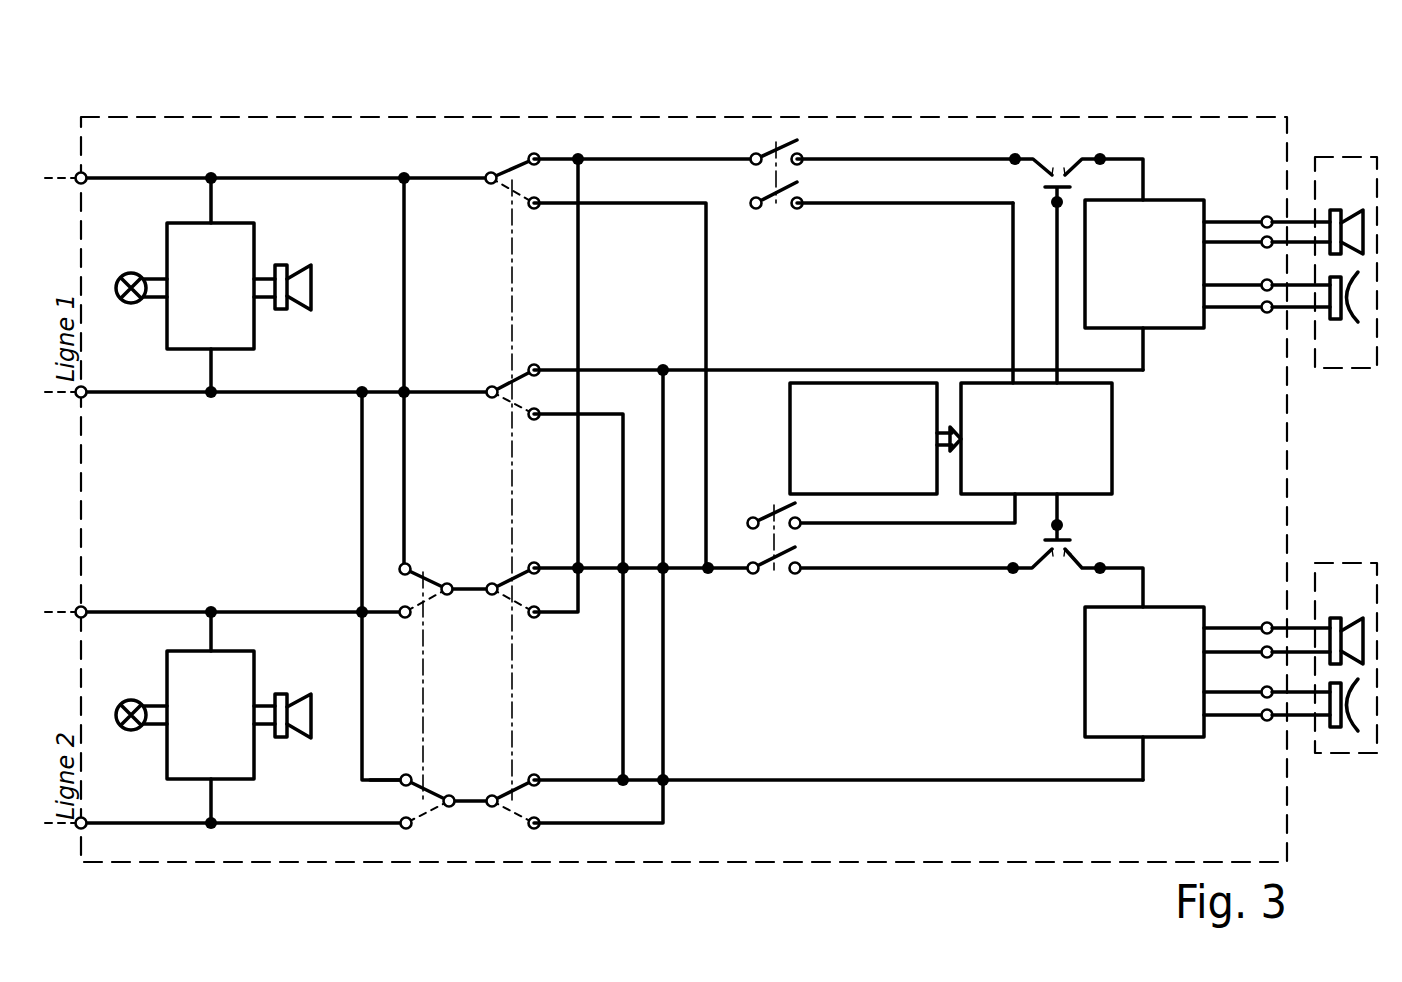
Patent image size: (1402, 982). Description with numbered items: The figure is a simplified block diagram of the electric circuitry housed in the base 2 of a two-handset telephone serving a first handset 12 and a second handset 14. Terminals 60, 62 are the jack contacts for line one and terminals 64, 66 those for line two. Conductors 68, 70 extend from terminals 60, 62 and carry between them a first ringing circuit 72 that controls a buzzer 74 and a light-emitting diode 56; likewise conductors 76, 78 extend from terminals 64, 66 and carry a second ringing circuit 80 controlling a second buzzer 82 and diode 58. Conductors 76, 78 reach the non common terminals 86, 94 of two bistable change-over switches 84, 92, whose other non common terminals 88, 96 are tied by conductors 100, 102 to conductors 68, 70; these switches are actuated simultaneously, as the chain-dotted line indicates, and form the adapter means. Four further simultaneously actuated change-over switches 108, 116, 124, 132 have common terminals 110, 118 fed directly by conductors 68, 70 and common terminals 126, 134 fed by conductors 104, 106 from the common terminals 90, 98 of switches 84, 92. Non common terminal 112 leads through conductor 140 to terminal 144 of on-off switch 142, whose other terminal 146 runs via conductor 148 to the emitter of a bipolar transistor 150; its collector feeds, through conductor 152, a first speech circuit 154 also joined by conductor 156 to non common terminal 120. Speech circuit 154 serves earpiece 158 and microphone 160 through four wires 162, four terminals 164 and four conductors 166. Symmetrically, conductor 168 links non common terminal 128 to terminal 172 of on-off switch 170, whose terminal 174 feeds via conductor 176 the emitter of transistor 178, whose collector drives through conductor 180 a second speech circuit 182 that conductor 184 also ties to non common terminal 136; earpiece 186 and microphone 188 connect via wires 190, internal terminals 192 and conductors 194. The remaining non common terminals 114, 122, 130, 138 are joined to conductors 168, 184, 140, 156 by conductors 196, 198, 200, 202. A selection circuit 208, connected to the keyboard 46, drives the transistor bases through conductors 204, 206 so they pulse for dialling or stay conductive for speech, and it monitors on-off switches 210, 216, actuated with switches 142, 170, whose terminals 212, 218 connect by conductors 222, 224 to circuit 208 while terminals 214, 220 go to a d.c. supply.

The base 2 is at (684, 489).
The first handset 12 is at (1346, 264).
The second handset 14 is at (1347, 660).
The keyboard 46 is at (880, 455).
The light-emitting diode 56 is at (131, 272).
The diode 58 is at (135, 730).
The first circuit terminal 60 is at (86, 173).
The first circuit terminal 62 is at (86, 397).
The terminal 64 is at (86, 608).
The terminal 66 is at (84, 828).
The conductor 68 is at (311, 178).
The conductor 70 is at (259, 395).
The first ringing circuit 72 is at (200, 235).
The buzzer 74 is at (292, 278).
The conductor 76 is at (260, 610).
The conductor 78 is at (333, 825).
The second ringing circuit 80 is at (220, 740).
The second buzzer 82 is at (298, 738).
The bistable change-over switch 84 is at (425, 574).
The non common terminal 86 is at (403, 618).
The non common terminal 88 is at (400, 565).
The common terminal 90 is at (448, 595).
The bistable change-over switch 92 is at (405, 772).
The non common terminal 94 is at (408, 830).
The non common terminal 96 is at (398, 784).
The common terminal 98 is at (450, 807).
The conductor 100 is at (405, 470).
The conductor 102 is at (360, 553).
The conductor 104 is at (467, 587).
The conductor 106 is at (463, 798).
The bistable change-over switch 108 is at (508, 168).
The common terminal 110 is at (487, 173).
The non common terminal 112 is at (535, 153).
The non common terminal 114 is at (538, 198).
The bistable change-over switch 116 is at (506, 383).
The common terminal 118 is at (488, 389).
The non common terminal 120 is at (536, 365).
The non common terminal 122 is at (536, 420).
The bistable change-over switch 124 is at (507, 576).
The common terminal 126 is at (492, 595).
The non common terminal 128 is at (536, 562).
The non common terminal 130 is at (536, 618).
The bistable change-over switch 132 is at (508, 793).
The common terminal 134 is at (492, 807).
The non common terminal 136 is at (537, 786).
The non common terminal 138 is at (534, 830).
The conductor 140 is at (663, 159).
The on-off switch 142 is at (778, 145).
The terminal 144 is at (755, 153).
The terminal 146 is at (799, 153).
The conductor 148 is at (935, 159).
The bipolar transistor 150 is at (1058, 176).
The conductor 152 is at (1143, 159).
The first speech circuit 154 is at (1160, 225).
The conductor 156 is at (882, 370).
The earpiece 158 is at (1350, 222).
The microphone 160 is at (1338, 320).
The wires 162 is at (1300, 242).
The terminals 164 is at (1268, 236).
The conductors 166 is at (1228, 242).
The conductor 168 is at (725, 568).
The on-off switch 170 is at (784, 580).
The terminal 172 is at (758, 573).
The terminal 174 is at (798, 573).
The conductor 176 is at (960, 568).
The bipolar transistor 178 is at (1056, 556).
The conductor 180 is at (1143, 576).
The second speech circuit 182 is at (1105, 715).
The conductor 184 is at (865, 780).
The earpiece 186 is at (1350, 628).
The microphone 188 is at (1338, 728).
The wires 190 is at (1303, 652).
The internal terminals 192 is at (1268, 646).
The conductors 194 is at (1228, 652).
The conductor 196 is at (706, 300).
The conductor 198 is at (624, 515).
The conductor 200 is at (578, 490).
The conductor 202 is at (663, 675).
The conductor 204 is at (1013, 298).
The conductor 206 is at (1057, 510).
The selection circuit 208 is at (1112, 462).
The on-off switch 210 is at (776, 198).
The terminal 212 is at (798, 209).
The terminal 214 is at (756, 209).
The on-off switch 216 is at (770, 510).
The terminal 218 is at (800, 528).
The terminal 220 is at (752, 529).
The conductor 222 is at (933, 203).
The conductor 224 is at (928, 523).